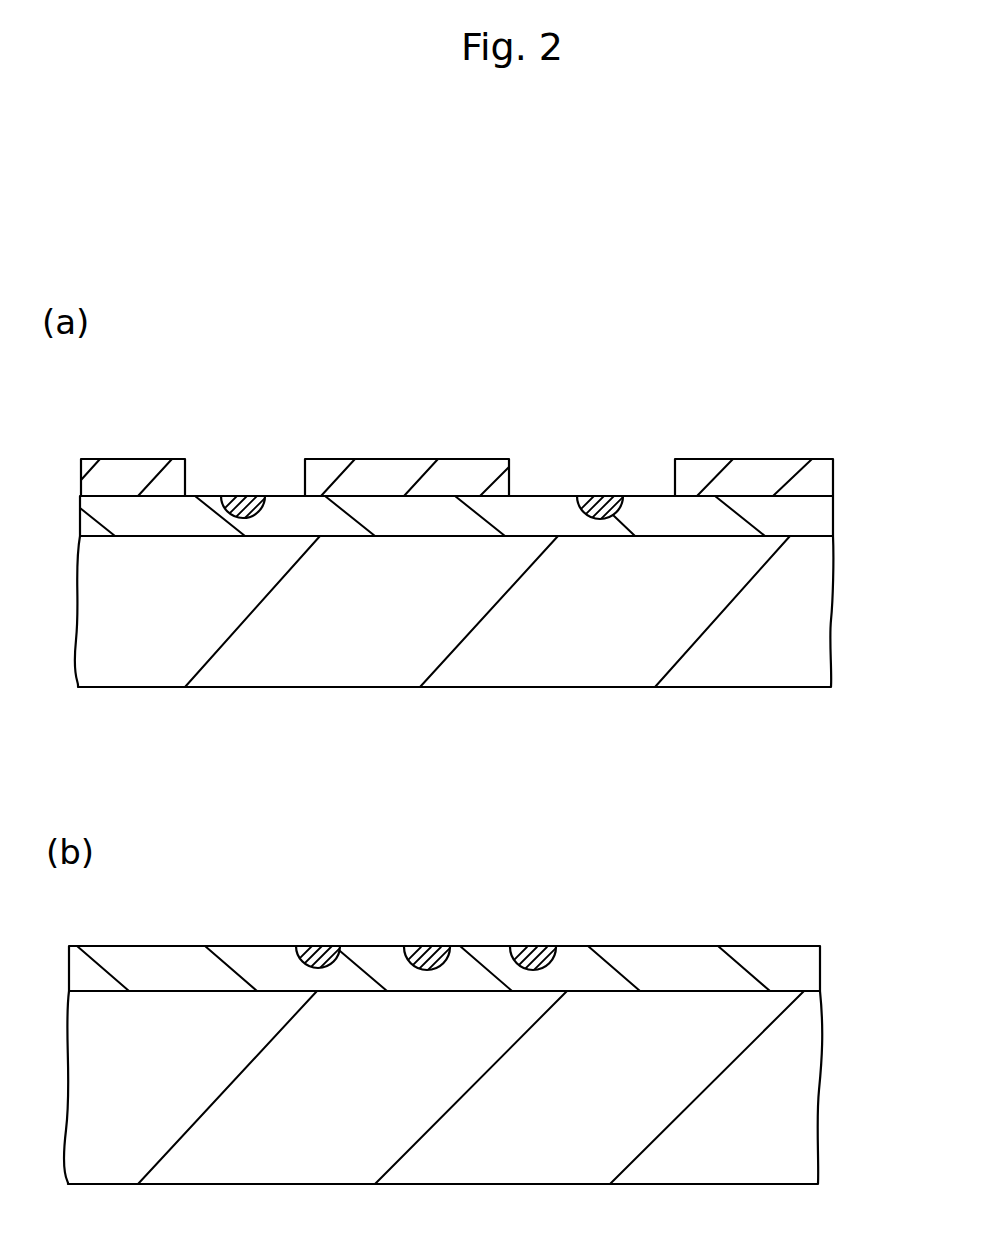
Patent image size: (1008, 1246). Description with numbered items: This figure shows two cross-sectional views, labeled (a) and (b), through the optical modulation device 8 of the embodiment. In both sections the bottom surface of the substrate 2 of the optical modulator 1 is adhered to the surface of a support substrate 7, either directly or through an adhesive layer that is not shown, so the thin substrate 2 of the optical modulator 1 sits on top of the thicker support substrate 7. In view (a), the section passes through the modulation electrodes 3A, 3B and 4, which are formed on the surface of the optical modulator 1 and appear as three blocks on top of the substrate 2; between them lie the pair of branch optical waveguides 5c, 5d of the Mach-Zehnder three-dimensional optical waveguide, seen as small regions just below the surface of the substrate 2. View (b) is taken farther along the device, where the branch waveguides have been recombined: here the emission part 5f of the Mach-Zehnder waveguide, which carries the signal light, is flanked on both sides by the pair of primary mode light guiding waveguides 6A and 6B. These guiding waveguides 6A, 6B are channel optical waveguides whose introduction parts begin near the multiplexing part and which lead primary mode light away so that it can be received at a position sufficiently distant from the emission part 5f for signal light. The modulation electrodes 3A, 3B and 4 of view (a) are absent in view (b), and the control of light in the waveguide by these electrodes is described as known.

The optical modulator 1 is at (482, 788).
The substrate 2 is at (527, 512).
The modulation electrode 3A is at (713, 468).
The modulation electrode 3B is at (125, 472).
The modulation electrode 4 is at (407, 473).
The branch optical waveguide 5c is at (600, 497).
The branch optical waveguide 5d is at (237, 507).
The emission part 5f is at (423, 948).
The primary mode light guiding waveguide 6A is at (547, 948).
The primary mode light guiding waveguide 6B is at (317, 946).
The support substrate 7 is at (813, 608).
The optical modulation device 8 is at (489, 428).